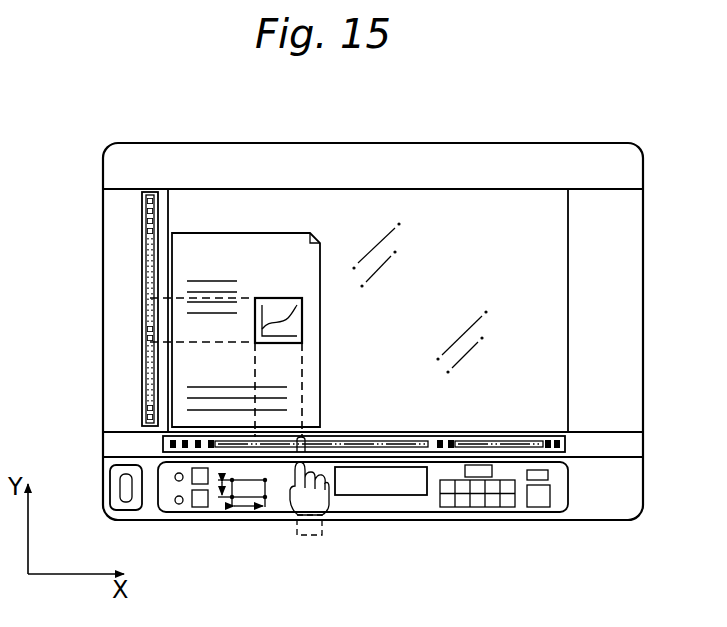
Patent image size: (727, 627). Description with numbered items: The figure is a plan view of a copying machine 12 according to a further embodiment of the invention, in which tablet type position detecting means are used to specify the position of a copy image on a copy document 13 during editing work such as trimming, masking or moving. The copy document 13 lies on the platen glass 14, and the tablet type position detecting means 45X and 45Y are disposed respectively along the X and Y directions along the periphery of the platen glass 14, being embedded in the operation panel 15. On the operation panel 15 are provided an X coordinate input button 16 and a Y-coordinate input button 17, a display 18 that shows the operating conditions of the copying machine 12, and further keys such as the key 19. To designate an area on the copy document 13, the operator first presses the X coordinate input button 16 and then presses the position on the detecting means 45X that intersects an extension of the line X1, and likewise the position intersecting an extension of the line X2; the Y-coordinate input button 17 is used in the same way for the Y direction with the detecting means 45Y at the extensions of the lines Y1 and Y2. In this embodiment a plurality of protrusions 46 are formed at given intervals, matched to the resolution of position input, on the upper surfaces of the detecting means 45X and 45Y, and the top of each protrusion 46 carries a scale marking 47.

The copying machine 12 is at (517, 127).
The copy document 13 is at (314, 248).
The platen glass 14 is at (553, 290).
The operation panel 15 is at (556, 521).
The X coordinate input button 16 is at (176, 481).
The Y-coordinate input button 17 is at (181, 504).
The display 18 is at (383, 487).
The key 19 is at (535, 497).
The tablet type position detecting means 45X is at (389, 443).
The tablet type position detecting means 45Y is at (147, 286).
The protrusions 46 is at (535, 440).
The scale marking 47 is at (560, 442).
The line X1 is at (255, 322).
The line X2 is at (303, 318).
The Y coordinate 1 of designated area Y1 is at (282, 298).
The Y coordinate 2 of designated area Y2 is at (276, 344).